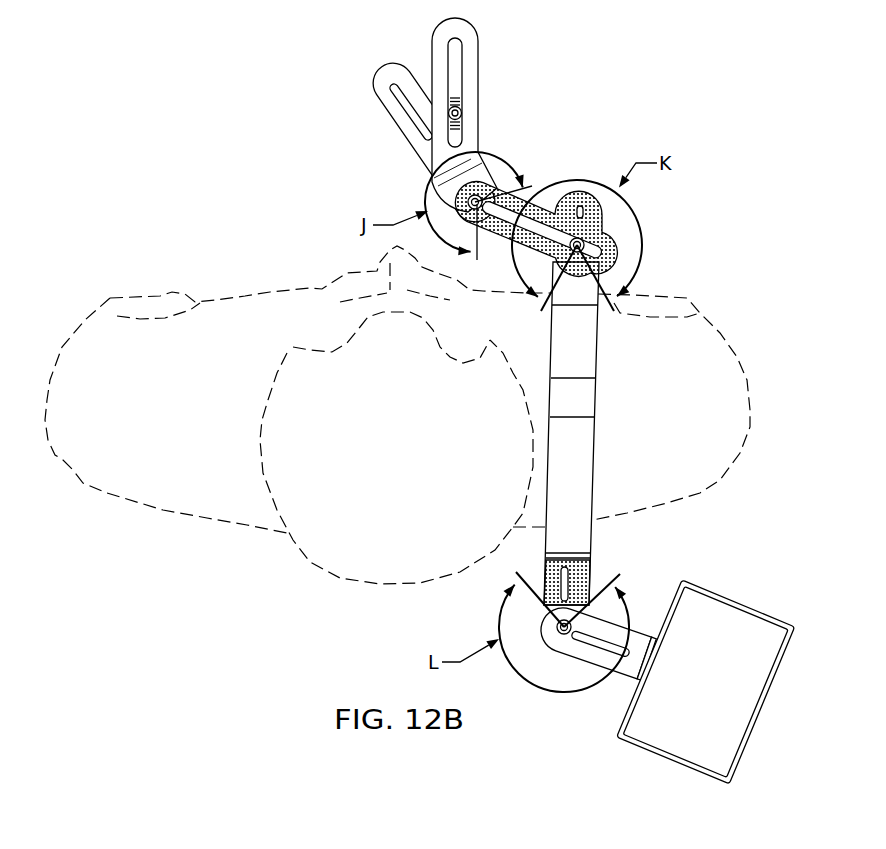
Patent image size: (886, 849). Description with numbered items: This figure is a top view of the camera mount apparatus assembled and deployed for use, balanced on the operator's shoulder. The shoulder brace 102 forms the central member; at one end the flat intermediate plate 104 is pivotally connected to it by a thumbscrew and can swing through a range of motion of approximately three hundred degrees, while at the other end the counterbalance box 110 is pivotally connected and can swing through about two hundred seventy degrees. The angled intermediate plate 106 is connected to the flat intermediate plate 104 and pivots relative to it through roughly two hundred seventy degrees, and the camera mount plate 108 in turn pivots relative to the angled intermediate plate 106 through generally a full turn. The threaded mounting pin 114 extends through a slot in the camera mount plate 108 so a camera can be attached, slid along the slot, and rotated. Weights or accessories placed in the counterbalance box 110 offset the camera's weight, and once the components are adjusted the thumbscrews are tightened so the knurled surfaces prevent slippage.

The shoulder brace 102 is at (597, 398).
The flat intermediate plate 104 is at (552, 207).
The angled intermediate plate 106 is at (443, 198).
The camera mount plate 108 is at (431, 44).
The counterbalance box 110 is at (675, 766).
The threaded mounting pin 114 is at (462, 112).